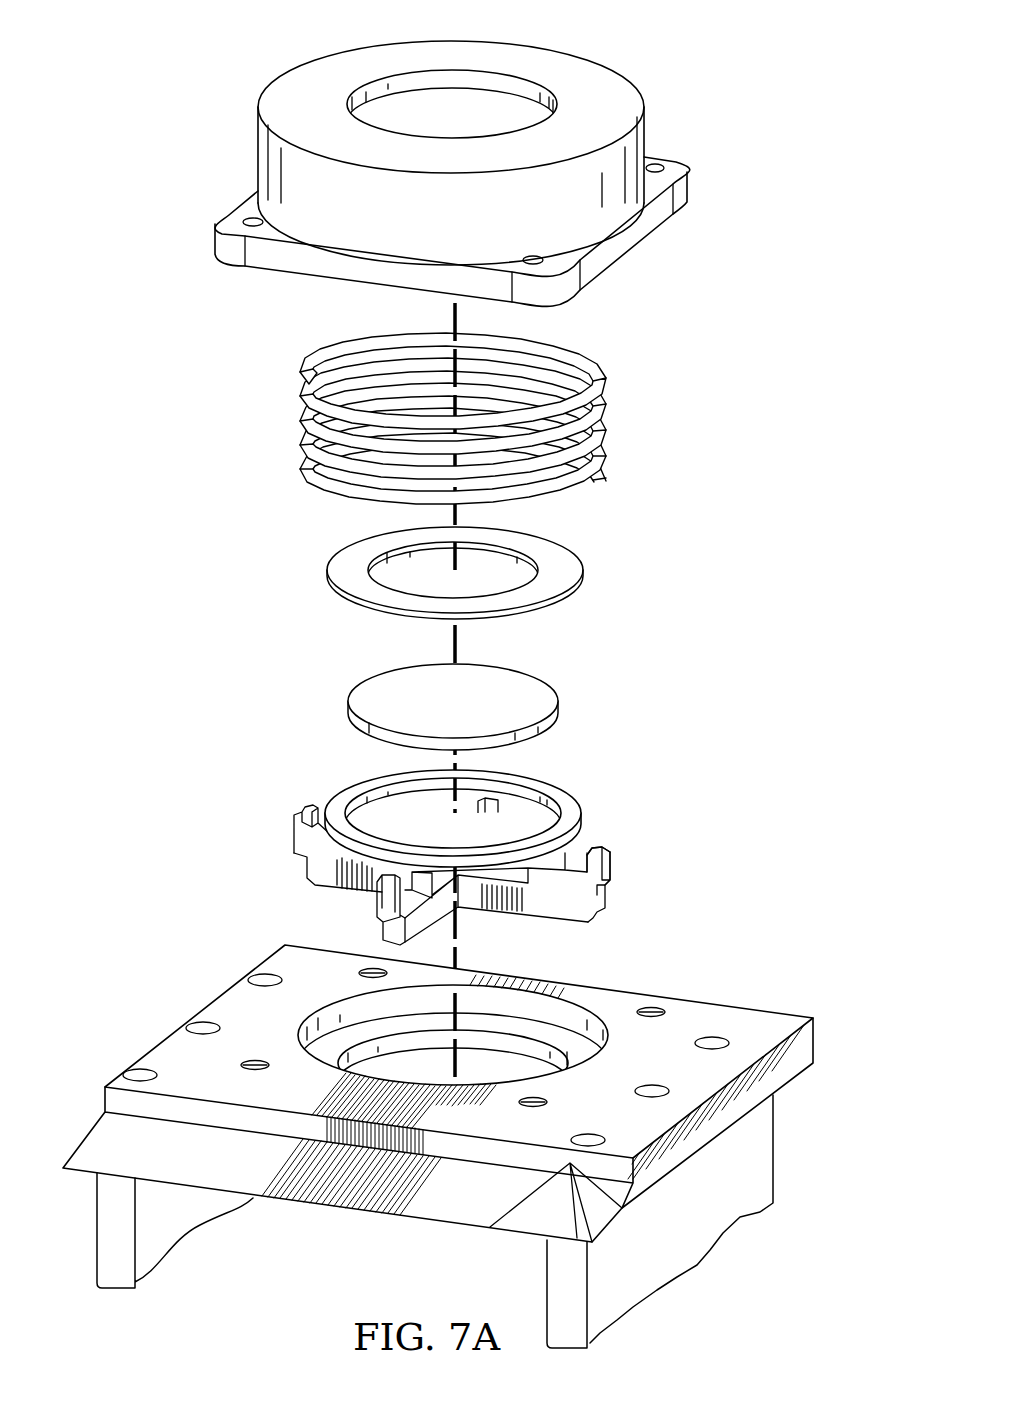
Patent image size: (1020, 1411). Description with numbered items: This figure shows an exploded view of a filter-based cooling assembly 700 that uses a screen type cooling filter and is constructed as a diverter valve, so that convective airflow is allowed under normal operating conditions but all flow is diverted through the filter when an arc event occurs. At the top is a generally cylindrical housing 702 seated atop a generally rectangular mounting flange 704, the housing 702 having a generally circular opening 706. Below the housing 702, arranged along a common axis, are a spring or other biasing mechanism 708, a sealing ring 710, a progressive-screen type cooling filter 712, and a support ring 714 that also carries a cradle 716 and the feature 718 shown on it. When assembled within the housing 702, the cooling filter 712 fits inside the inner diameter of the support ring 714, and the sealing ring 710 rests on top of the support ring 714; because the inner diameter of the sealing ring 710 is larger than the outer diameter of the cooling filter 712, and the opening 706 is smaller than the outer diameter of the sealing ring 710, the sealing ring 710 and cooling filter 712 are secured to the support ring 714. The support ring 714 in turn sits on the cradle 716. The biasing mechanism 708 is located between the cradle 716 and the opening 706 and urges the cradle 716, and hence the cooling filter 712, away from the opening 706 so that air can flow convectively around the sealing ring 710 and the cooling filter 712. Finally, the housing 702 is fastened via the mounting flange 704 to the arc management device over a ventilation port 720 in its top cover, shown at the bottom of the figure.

The filter-based cooling assembly 700 is at (124, 76).
The housing 702 is at (260, 138).
The mounting flange 704 is at (617, 245).
The opening 706 is at (505, 114).
The spring or other biasing mechanism 708 is at (306, 424).
The sealing ring 710 is at (330, 575).
The cooling filter 712 is at (350, 707).
The support ring 714 is at (342, 802).
The cradle 716 is at (612, 868).
The notch 718 is at (593, 836).
The ventilation port 720 is at (570, 1018).